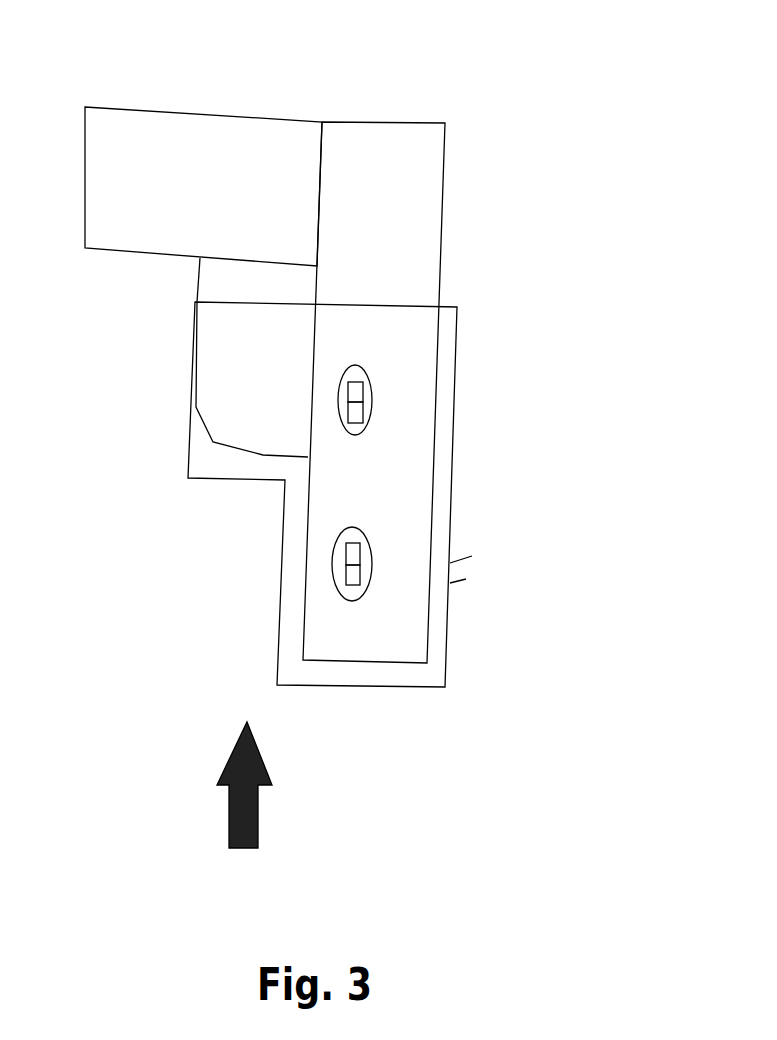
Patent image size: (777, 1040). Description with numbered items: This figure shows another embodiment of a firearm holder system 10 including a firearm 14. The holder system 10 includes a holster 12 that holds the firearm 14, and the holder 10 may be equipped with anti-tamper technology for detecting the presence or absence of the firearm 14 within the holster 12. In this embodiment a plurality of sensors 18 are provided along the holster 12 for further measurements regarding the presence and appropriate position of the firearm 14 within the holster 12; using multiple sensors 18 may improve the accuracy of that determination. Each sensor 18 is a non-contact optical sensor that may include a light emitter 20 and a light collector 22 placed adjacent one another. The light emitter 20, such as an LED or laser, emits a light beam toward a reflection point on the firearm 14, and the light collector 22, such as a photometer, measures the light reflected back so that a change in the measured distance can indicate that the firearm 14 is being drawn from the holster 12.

The firearm holder system 10 is at (244, 807).
The holster 12 is at (452, 497).
The firearm 14 is at (382, 122).
The sensor 18 is at (358, 365).
The light emitter 20 is at (363, 412).
The light collector 22 is at (365, 390).